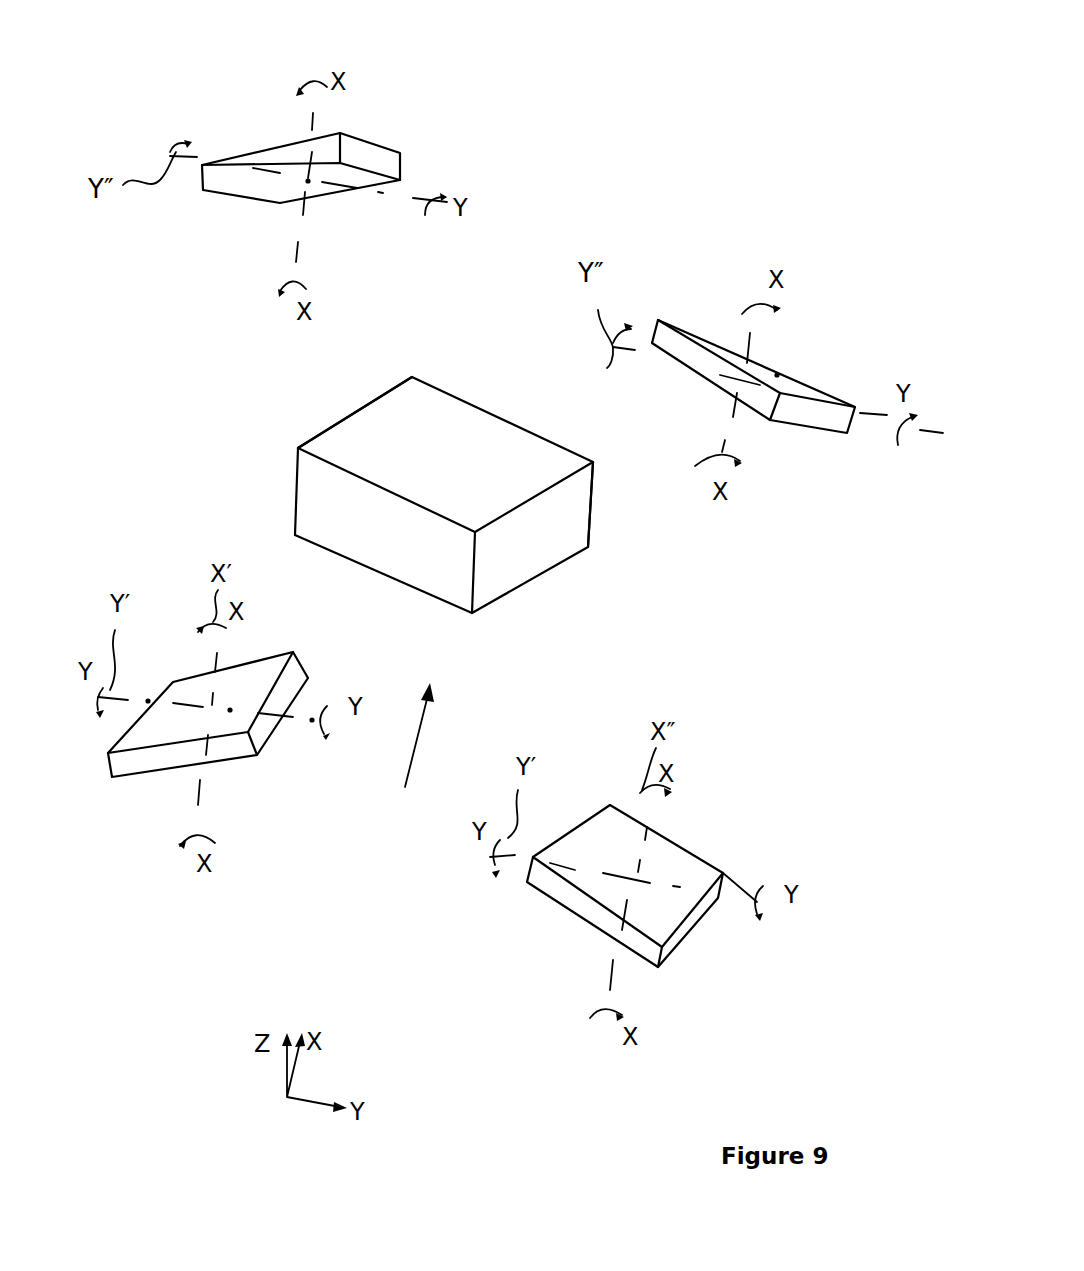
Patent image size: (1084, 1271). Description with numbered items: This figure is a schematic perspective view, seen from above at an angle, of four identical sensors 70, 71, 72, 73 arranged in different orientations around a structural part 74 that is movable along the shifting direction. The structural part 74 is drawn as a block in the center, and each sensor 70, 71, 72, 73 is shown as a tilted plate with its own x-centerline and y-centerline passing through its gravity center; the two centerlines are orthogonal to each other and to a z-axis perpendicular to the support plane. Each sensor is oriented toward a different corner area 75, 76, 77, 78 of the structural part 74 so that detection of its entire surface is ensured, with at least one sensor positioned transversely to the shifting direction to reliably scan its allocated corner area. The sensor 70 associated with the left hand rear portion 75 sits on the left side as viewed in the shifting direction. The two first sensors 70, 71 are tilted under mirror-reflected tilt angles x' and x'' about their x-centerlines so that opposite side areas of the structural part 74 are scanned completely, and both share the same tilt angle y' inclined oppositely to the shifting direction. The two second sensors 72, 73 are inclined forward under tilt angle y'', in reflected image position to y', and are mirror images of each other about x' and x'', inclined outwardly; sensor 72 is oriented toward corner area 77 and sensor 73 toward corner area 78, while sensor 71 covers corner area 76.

The sensor 70 is at (133, 760).
The sensor 71 is at (587, 908).
The sensor 72 is at (240, 188).
The sensor 73 is at (835, 415).
The structural part 74 is at (353, 438).
The corner area 75 is at (292, 505).
The corner area 76 is at (482, 580).
The corner area 77 is at (423, 410).
The corner area 78 is at (592, 507).